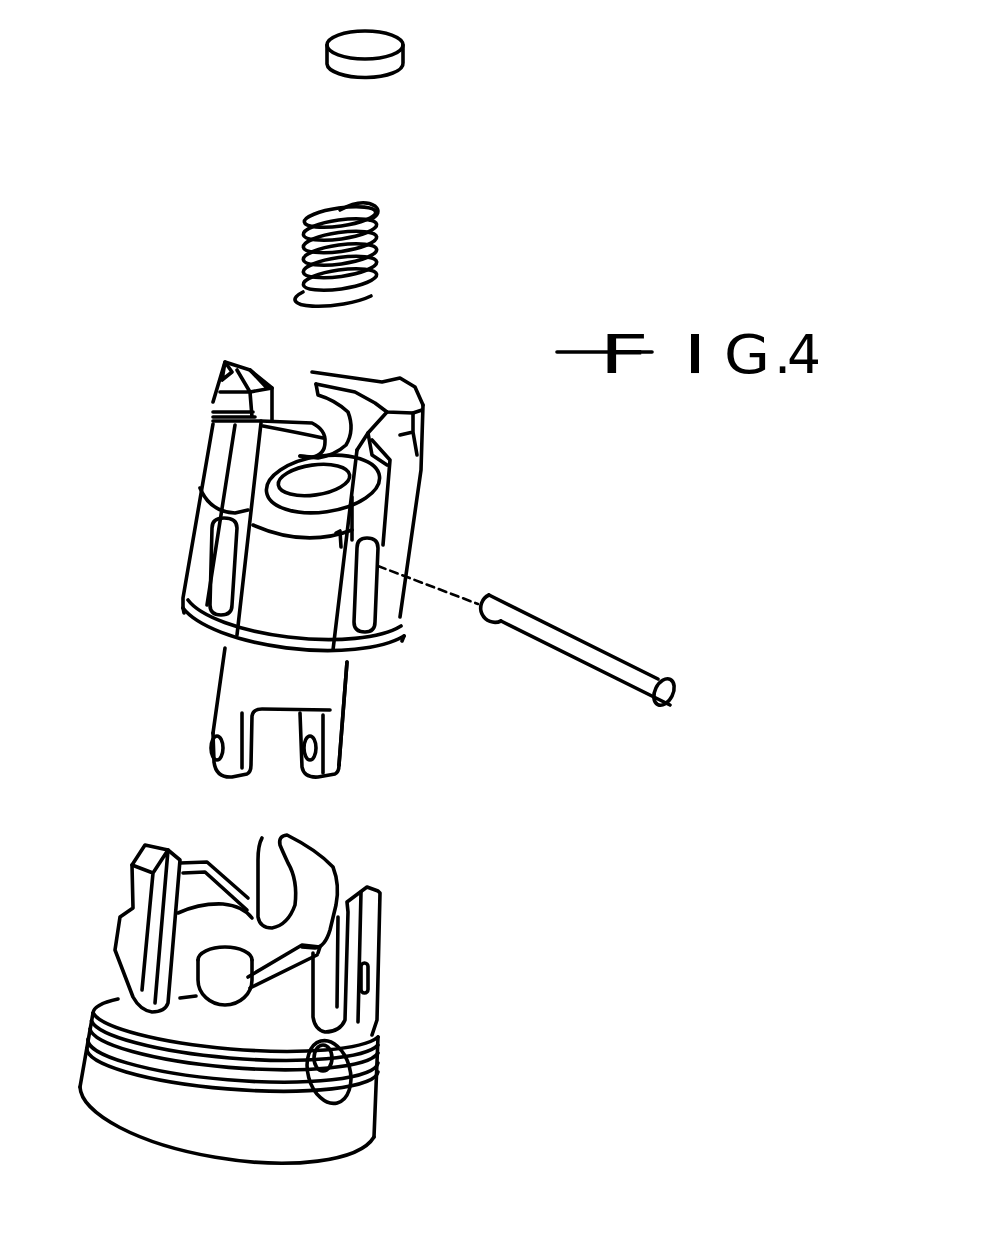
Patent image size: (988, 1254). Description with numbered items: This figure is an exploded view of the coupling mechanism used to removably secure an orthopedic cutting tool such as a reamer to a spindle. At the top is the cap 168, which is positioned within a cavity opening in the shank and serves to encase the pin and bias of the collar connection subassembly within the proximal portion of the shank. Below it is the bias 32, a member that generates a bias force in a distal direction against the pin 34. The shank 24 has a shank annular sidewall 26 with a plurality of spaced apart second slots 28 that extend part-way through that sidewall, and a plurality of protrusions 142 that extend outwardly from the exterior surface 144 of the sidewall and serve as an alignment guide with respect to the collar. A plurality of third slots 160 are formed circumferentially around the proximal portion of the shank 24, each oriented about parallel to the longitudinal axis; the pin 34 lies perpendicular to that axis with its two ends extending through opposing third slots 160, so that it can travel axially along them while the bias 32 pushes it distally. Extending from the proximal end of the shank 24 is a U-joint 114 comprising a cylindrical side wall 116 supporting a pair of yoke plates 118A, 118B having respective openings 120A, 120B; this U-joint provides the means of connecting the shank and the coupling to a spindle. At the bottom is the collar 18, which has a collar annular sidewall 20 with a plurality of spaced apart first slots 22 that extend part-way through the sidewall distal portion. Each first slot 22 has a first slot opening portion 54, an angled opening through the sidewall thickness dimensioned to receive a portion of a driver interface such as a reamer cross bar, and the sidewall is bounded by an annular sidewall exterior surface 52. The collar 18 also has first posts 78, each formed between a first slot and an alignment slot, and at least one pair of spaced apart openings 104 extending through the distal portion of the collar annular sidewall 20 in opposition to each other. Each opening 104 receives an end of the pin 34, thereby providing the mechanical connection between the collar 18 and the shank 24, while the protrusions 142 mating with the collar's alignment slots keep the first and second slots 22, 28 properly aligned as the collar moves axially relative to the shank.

The cap 168 is at (407, 57).
The bias 32 is at (373, 245).
The second slots 28 is at (304, 483).
The protrusions 142 is at (222, 462).
The shank annular sidewall 26 is at (343, 518).
The shank 24 is at (368, 570).
The third slots 160 is at (225, 553).
The exterior surface 144 is at (337, 537).
The pin 34 is at (565, 627).
The cylindrical side wall 116 is at (242, 673).
The U-joint 114 is at (322, 690).
The yoke plate 118B is at (228, 720).
The yoke plate 118A is at (333, 770).
The opening 120B is at (217, 740).
The opening 120A is at (323, 747).
The collar annular sidewall 20 is at (177, 1020).
The first slots 22 is at (222, 960).
The first slot opening portion 54 is at (272, 945).
The first post 78 is at (293, 982).
The collar 18 is at (337, 1010).
The annular sidewall exterior surface 52 is at (272, 1024).
The openings 104 is at (333, 1087).